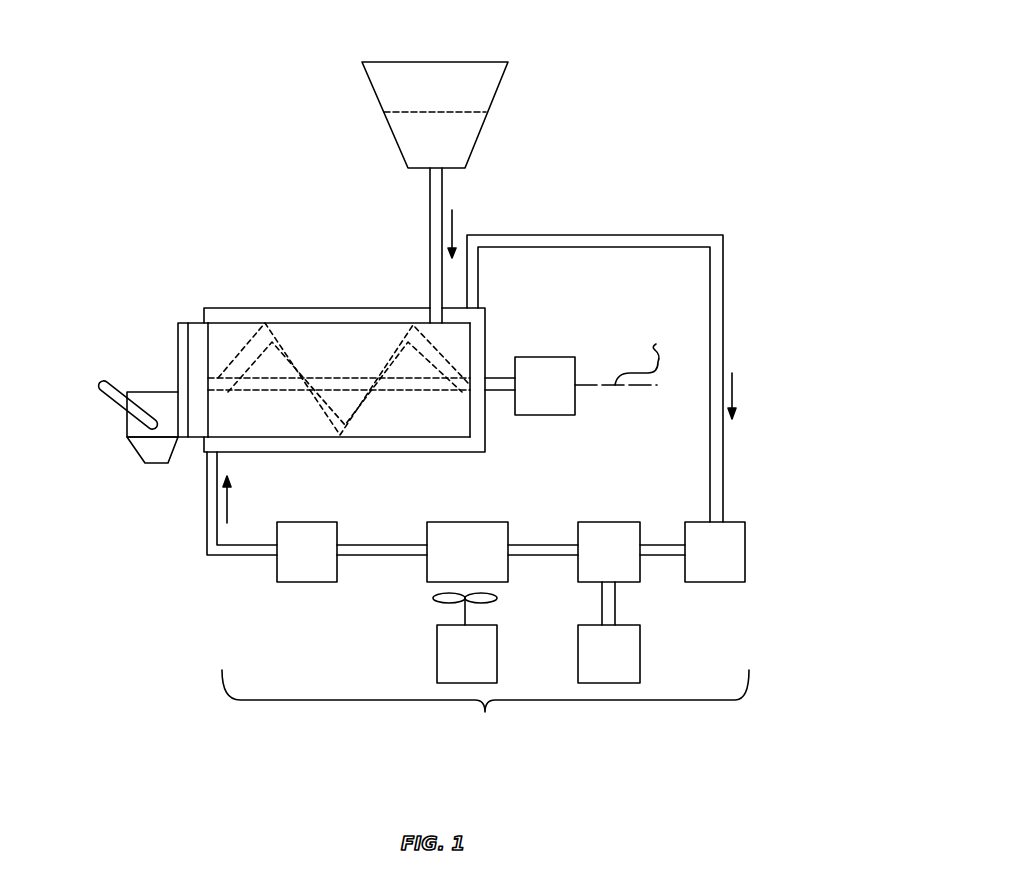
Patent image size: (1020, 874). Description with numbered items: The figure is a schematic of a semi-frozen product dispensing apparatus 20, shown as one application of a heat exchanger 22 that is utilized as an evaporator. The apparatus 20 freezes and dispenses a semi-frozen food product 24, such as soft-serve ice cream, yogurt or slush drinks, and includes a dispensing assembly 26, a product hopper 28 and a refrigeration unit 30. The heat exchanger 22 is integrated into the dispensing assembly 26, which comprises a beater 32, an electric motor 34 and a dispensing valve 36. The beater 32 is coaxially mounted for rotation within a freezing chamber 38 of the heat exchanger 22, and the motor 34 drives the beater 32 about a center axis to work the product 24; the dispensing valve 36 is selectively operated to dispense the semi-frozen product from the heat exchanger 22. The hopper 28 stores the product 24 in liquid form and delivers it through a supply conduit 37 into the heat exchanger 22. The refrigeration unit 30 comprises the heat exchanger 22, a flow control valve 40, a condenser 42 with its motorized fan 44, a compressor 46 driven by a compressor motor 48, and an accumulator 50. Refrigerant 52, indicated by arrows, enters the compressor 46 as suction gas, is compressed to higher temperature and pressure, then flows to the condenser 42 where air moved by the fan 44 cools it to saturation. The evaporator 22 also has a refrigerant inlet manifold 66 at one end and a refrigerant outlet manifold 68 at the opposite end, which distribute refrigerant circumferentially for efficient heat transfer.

The semi-frozen product dispensing apparatus 20 is at (706, 80).
The heat exchanger 22 is at (312, 303).
The semi-frozen food product 24 is at (427, 148).
The dispensing assembly 26 is at (122, 264).
The product hopper 28 is at (503, 88).
The refrigeration unit 30 is at (485, 714).
The beater 32 is at (250, 340).
The electric motor 34 is at (545, 357).
The dispensing valve 36 is at (123, 423).
The supply conduit 37 is at (442, 190).
The freezing chamber 38 is at (248, 418).
The flow control valve 40 is at (305, 522).
The condenser 42 is at (470, 522).
The condenser motorized fan 44 is at (497, 660).
The compressor 46 is at (610, 522).
The compressor motor 48 is at (640, 660).
The accumulator 50 is at (745, 548).
The refrigerant 52 is at (733, 385).
The refrigerant inlet manifold 66 is at (485, 330).
The refrigerant outlet manifold 68 is at (198, 322).